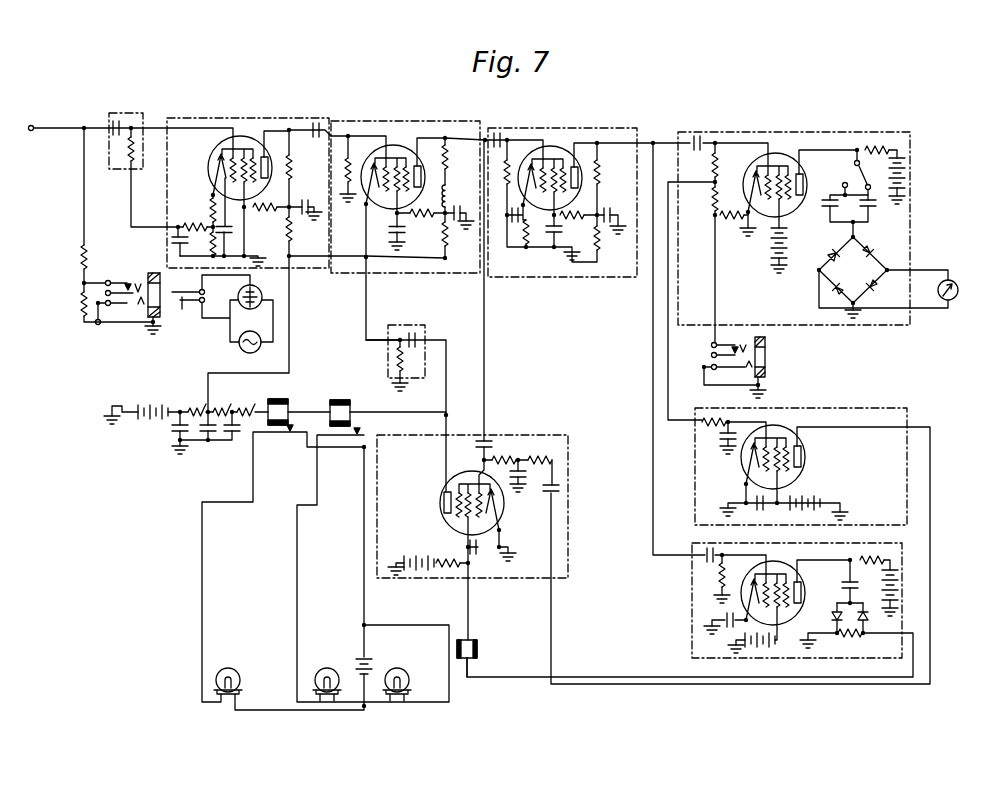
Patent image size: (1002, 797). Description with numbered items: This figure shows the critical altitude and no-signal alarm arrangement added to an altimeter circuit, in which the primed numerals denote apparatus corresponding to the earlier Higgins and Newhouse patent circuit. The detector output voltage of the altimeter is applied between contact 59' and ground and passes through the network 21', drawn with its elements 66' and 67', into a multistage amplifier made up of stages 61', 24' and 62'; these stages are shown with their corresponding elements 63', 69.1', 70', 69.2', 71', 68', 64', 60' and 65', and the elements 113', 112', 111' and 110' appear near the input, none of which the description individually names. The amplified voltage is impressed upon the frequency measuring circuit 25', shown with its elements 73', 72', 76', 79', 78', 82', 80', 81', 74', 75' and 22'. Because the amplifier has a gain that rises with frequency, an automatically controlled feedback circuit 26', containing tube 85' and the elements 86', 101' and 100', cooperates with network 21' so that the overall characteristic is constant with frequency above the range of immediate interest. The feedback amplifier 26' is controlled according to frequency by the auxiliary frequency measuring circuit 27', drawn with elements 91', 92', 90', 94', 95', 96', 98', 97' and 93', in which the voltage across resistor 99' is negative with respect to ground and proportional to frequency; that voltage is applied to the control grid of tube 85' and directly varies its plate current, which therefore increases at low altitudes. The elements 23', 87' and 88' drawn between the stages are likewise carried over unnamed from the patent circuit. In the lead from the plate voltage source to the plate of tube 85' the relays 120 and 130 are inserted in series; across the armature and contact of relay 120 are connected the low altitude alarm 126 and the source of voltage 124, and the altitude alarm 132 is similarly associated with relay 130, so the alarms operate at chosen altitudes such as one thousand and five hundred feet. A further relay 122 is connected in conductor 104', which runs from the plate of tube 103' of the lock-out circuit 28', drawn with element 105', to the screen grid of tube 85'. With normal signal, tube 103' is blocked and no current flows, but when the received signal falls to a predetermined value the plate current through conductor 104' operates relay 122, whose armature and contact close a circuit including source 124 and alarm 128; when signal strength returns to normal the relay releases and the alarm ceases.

The contact 59' is at (44, 116).
The network 21' is at (135, 129).
The capacitor 66' is at (102, 140).
The resistor 67' is at (133, 177).
The amplifier stage 61' is at (248, 178).
The vacuum tube 63' is at (240, 144).
The resistor 69.1' is at (193, 200).
The resistor 70' is at (192, 216).
The resistor 69.2' is at (193, 254).
The capacitor 71' is at (163, 241).
The capacitor 68' is at (243, 217).
The potentiometer 113' is at (96, 226).
The switch 112' is at (122, 294).
The input terminals 111' is at (191, 312).
The detector 110' is at (281, 296).
The amplifier stage 24' is at (405, 183).
The vacuum tube 64' is at (393, 151).
The inductor 60' is at (458, 187).
The vacuum tube 65' is at (550, 156).
The amplifier stage 62' is at (562, 190).
The resistor 73' is at (715, 147).
The vacuum tube 72' is at (775, 162).
The frequency measuring circuit 25' is at (794, 216).
The resistor 76' is at (881, 134).
The switch 79' is at (845, 170).
The battery 78' is at (916, 181).
The capacitor 82' is at (834, 209).
The capacitor 80' is at (880, 208).
The bridge rectifier 81' is at (853, 270).
The meter 22' is at (963, 290).
The resistor 74' is at (702, 265).
The resistor 75' is at (734, 240).
The lock-out circuit 28' is at (801, 456).
The resistor 105' is at (689, 437).
The tube 103' is at (795, 457).
The conductor 104' is at (763, 555).
The auxiliary frequency measuring circuit 27' is at (776, 600).
The capacitor 91' is at (722, 543).
The resistor 92' is at (693, 580).
The vacuum tube 90' is at (773, 586).
The resistor 94' is at (881, 550).
The battery 95' is at (905, 593).
The capacitor 96' is at (834, 581).
The diode 98' is at (820, 618).
The diode 97' is at (875, 629).
The resistor 99' is at (842, 644).
The capacitor 93' is at (702, 632).
The filter network 23' is at (406, 341).
The capacitor 87' is at (435, 333).
The resistor 88' is at (379, 365).
The feedback circuit 26' is at (489, 506).
The capacitor 86' is at (494, 432).
The resistors 101' is at (530, 451).
The capacitor 100' is at (576, 487).
The tube 85' is at (486, 503).
The relay 130 is at (272, 398).
The relay 120 is at (339, 401).
The relay 122 is at (478, 651).
The source of voltage 124 is at (352, 659).
The low altitude alarm 126 is at (314, 681).
The alarm 128 is at (409, 678).
The altitude alarm 132 is at (235, 667).